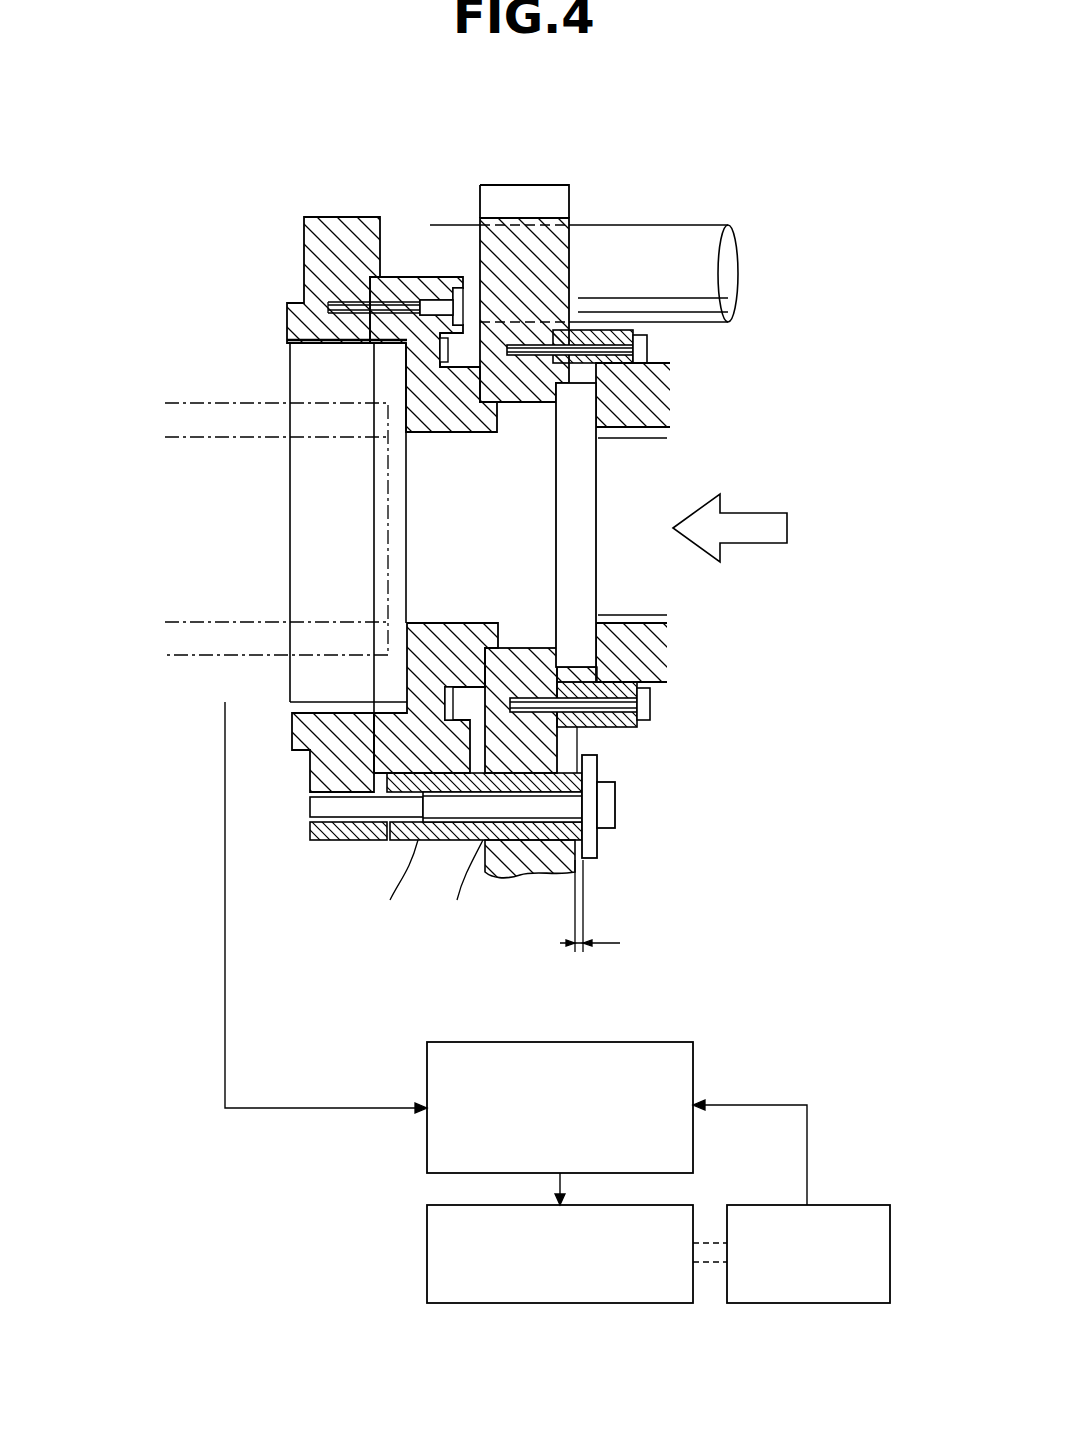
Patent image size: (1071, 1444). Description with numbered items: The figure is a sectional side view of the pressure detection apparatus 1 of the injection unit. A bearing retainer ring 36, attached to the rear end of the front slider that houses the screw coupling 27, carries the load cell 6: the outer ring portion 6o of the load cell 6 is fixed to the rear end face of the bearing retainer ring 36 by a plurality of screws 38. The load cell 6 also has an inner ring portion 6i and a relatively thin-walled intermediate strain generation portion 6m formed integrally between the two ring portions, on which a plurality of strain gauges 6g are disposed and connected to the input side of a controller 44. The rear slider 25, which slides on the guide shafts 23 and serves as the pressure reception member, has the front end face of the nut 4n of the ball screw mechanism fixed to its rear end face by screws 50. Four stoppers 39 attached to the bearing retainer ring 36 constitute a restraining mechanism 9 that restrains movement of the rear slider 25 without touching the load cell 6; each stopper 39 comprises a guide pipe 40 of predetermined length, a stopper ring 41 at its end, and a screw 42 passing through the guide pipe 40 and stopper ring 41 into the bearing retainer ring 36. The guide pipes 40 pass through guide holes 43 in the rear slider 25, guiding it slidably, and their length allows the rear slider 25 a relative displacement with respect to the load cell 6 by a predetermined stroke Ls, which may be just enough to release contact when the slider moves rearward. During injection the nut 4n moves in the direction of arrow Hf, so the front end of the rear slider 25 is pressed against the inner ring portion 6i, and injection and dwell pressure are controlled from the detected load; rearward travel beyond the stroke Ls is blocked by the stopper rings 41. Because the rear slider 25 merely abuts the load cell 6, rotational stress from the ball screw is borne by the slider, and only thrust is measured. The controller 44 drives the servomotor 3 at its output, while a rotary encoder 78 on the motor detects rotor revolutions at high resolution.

The rotary table apparatus 1 is at (704, 782).
The servomotor 3 is at (427, 1262).
The nut 4n is at (658, 366).
The load cell 6 is at (400, 278).
The strain gauges 6g is at (447, 353).
The inner ring portion 6i is at (535, 660).
The intermediate strain generation portion 6m is at (402, 353).
The outer ring portion 6o is at (443, 280).
The restraining mechanism 9 is at (647, 847).
The guide shafts 23 is at (652, 225).
The rear slider 25 is at (513, 185).
The screw coupling 27 is at (217, 660).
The bearing retainer ring 36 is at (300, 268).
The screws 38 is at (345, 300).
The stoppers 39 is at (619, 789).
The guide pipe 40 is at (417, 842).
The stopper ring 41 is at (598, 770).
The screw 42 is at (330, 842).
The guide holes 43 is at (468, 858).
The controller 44 is at (450, 1042).
The screws 50 is at (647, 340).
The rotary encoder 78 is at (860, 1205).
The arrow Hf is at (757, 513).
The stroke Ls is at (609, 913).